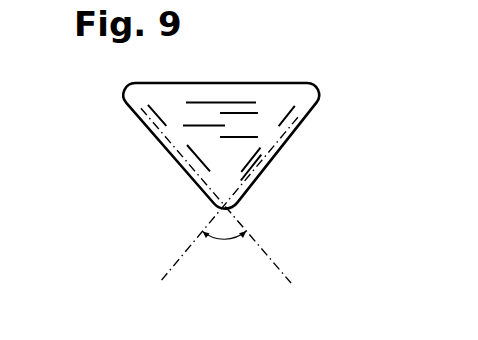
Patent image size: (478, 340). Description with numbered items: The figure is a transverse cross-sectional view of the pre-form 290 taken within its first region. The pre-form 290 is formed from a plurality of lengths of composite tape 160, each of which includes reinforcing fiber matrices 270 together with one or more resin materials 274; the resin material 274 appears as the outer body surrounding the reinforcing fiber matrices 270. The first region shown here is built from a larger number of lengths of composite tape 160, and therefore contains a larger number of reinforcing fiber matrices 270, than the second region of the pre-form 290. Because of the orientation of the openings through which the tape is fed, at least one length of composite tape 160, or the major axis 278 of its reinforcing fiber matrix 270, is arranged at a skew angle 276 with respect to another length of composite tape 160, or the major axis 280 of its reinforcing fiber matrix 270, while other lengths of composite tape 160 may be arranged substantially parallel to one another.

The composite tape 160 is at (192, 170).
The reinforcing fiber matrix 270 is at (257, 136).
The resin material 274 is at (290, 92).
The skew angle 276 is at (226, 240).
The major axis 278 is at (188, 246).
The major axis 280 is at (286, 267).
The pre-form 290 is at (405, 62).